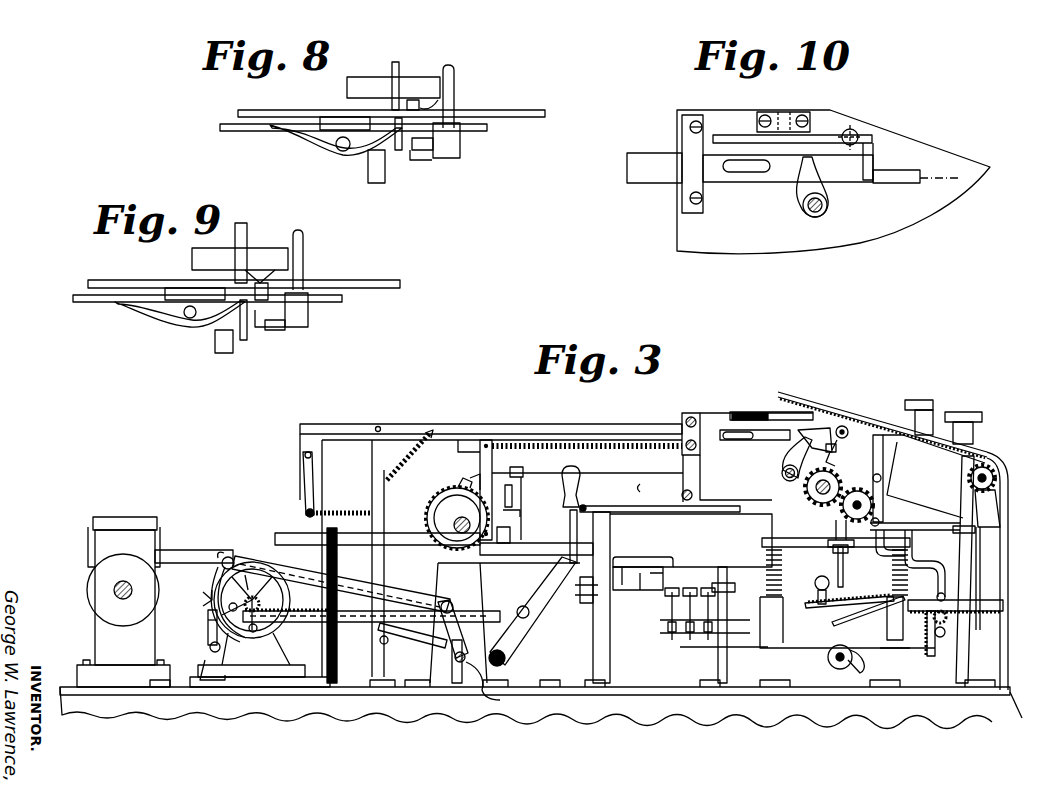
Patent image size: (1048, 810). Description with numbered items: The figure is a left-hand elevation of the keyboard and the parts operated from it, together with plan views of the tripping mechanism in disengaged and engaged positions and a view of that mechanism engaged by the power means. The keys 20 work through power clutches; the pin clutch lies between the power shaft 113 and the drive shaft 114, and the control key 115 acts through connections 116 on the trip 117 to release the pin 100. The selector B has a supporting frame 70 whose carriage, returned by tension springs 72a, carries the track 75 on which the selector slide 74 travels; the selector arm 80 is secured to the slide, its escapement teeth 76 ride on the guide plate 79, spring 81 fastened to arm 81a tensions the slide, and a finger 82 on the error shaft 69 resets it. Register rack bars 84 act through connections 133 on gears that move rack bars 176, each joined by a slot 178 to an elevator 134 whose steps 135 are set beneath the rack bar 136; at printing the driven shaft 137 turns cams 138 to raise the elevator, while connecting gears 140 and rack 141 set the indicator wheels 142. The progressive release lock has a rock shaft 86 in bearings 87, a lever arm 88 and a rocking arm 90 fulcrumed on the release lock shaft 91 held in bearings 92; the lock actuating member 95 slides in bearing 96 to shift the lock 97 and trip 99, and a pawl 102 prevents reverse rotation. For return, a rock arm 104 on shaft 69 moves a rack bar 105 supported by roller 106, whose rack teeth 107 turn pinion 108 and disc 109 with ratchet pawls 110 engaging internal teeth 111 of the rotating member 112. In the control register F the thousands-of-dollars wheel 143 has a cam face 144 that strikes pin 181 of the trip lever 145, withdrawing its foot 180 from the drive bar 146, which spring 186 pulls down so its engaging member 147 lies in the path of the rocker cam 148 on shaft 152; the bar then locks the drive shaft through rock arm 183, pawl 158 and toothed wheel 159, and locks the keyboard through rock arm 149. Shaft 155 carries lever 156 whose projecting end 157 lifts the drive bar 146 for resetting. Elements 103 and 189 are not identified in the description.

In FIG. 3, the keys 20 is at (971, 402).
In FIG. 3, the error rock shaft 69 is at (485, 687).
In FIG. 3, the supporting frame 70 is at (610, 651).
In FIG. 3, the tension springs 72a is at (592, 504).
In FIG. 3, the selector slide 74 is at (569, 543).
In FIG. 3, the guide rail or track 75 is at (700, 545).
In FIG. 3, the escapement teeth 76 is at (629, 560).
In FIG. 3, the guide plate 79 is at (660, 591).
In FIG. 3, the selector arm 80 is at (616, 499).
In FIG. 3, the spring 81 is at (538, 454).
In FIG. 3, the arm of slide 81a is at (470, 440).
In FIG. 3, the finger 82 is at (560, 580).
In FIG. 3, the register rack bars 84 is at (690, 612).
In FIG. 3, the rock shaft 86 is at (462, 648).
In FIG. 3, the bearings 87 is at (450, 676).
In FIG. 3, the lever arm 88 is at (452, 640).
In FIG. 3, the rocking arm 90 is at (223, 557).
In FIG. 3, the release lock shaft 91 is at (262, 603).
In FIG. 3, the bearings 92 is at (208, 675).
In FIG. 3, the lock actuating member 95 is at (410, 533).
In FIG. 3, the bearing 96 is at (337, 647).
In FIG. 3, the lock 97 is at (536, 553).
In FIG. 3, the trip 99 is at (458, 488).
In FIG. 3, the pin 100 is at (458, 474).
In FIG. 3, the spring-tensioned pawl 102 is at (208, 637).
In FIG. 3, the link 103 is at (210, 649).
In FIG. 3, the rock arm 104 is at (530, 648).
In FIG. 3, the rack bar 105 is at (454, 582).
In FIG. 3, the roller 106 is at (242, 640).
In FIG. 3, the rack teeth 107 is at (285, 598).
In FIG. 3, the pinion 108 is at (284, 575).
In FIG. 3, the disc 109 is at (248, 570).
In FIG. 3, the ratchet pawls 110 is at (222, 590).
In FIG. 3, the internal teeth 111 is at (248, 572).
In FIG. 3, the rotating member 112 is at (207, 598).
In FIG. 3, the power shaft 113 is at (162, 550).
In FIG. 3, the drive shaft 114 is at (457, 518).
In FIG. 3, the control key 115 is at (906, 398).
In FIG. 3, the connections 116 is at (652, 487).
In FIG. 3, the trip 117 is at (480, 472).
In FIG. 3, the connections 133 is at (687, 648).
In FIG. 3, the elevator 134 is at (885, 592).
In FIG. 3, the steps 135 is at (855, 625).
In FIG. 3, the rack bar 136 is at (838, 562).
In FIG. 3, the driven shaft 137 is at (830, 666).
In FIG. 3, the cams 138 is at (862, 672).
In FIG. 3, the connecting gears 140 is at (913, 633).
In FIG. 3, the rack 141 is at (952, 512).
In FIG. 3, the indicator wheels 142 is at (970, 470).
In FIG. 8, the thousands of dollars wheel 143 is at (347, 87).
In FIG. 9, the thousands of dollars wheel 143 is at (192, 261).
In FIG. 3, the thousands of dollars wheel 143 is at (806, 418).
In FIG. 8, the cam face 144 is at (440, 106).
In FIG. 9, the cam face 144 is at (272, 269).
In FIG. 8, the trip lever 145 is at (398, 151).
In FIG. 9, the trip lever 145 is at (244, 341).
In FIG. 10, the trip lever 145 is at (822, 140).
In FIG. 8, the drive bar 146 is at (283, 131).
In FIG. 9, the drive bar 146 is at (128, 303).
In FIG. 10, the drive bar 146 is at (716, 173).
In FIG. 10, the engaging member 147 is at (822, 150).
In FIG. 3, the engaging member 147 is at (800, 450).
In FIG. 8, the rocker cam 148 is at (344, 156).
In FIG. 9, the rocker cam 148 is at (180, 314).
In FIG. 10, the rocker cam 148 is at (797, 188).
In FIG. 3, the rocker cam 148 is at (782, 471).
In FIG. 3, the rock arm 149 is at (922, 542).
In FIG. 8, the shaft 152 is at (375, 183).
In FIG. 9, the shaft 152 is at (215, 346).
In FIG. 10, the shaft 152 is at (828, 208).
In FIG. 3, the shaft 152 is at (785, 477).
In FIG. 8, the shaft 155 is at (455, 72).
In FIG. 9, the shaft 155 is at (305, 246).
In FIG. 3, the shaft 155 is at (843, 426).
In FIG. 8, the lever 156 is at (450, 160).
In FIG. 9, the lever 156 is at (308, 329).
In FIG. 3, the lever 156 is at (840, 448).
In FIG. 8, the projecting end 157 is at (420, 161).
In FIG. 9, the projecting end 157 is at (270, 331).
In FIG. 3, the projecting end 157 is at (838, 462).
In FIG. 3, the pawl 158 is at (823, 487).
In FIG. 3, the toothed wheel 159 is at (857, 500).
In FIG. 3, the rack bars 176 is at (1003, 603).
In FIG. 3, the slot 178 is at (912, 553).
In FIG. 8, the foot 180 is at (461, 146).
In FIG. 9, the foot 180 is at (310, 316).
In FIG. 10, the foot 180 is at (870, 180).
In FIG. 8, the pin 181 is at (413, 100).
In FIG. 9, the pin 181 is at (270, 292).
In FIG. 3, the rock arm 183 is at (372, 468).
In FIG. 3, the spring 186 is at (410, 463).
In FIG. 3, the lever bar 189 is at (343, 570).
In FIG. 3, the control register F is at (710, 396).
In FIG. 3, the selector B is at (653, 700).